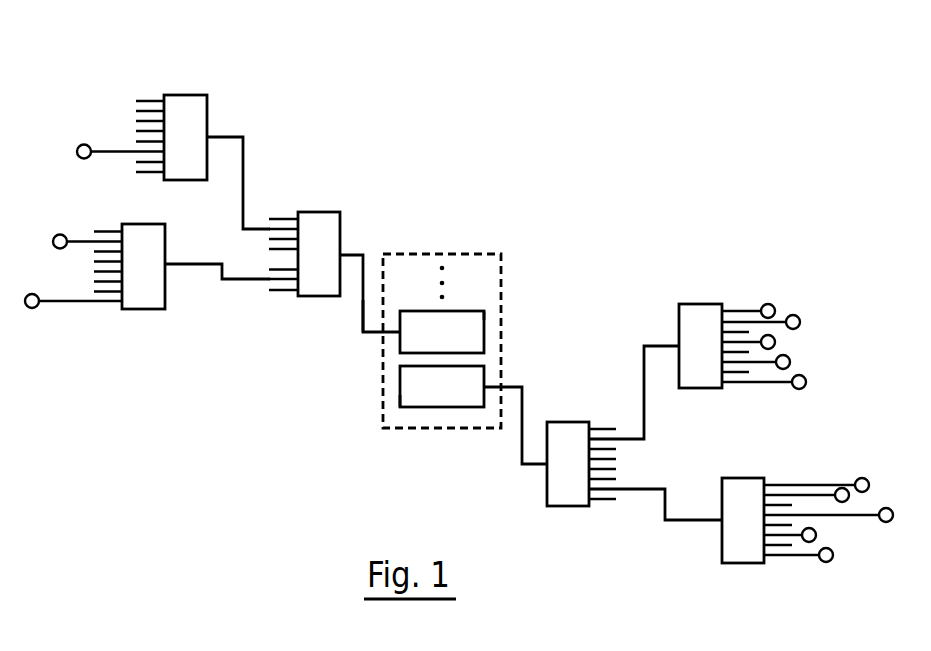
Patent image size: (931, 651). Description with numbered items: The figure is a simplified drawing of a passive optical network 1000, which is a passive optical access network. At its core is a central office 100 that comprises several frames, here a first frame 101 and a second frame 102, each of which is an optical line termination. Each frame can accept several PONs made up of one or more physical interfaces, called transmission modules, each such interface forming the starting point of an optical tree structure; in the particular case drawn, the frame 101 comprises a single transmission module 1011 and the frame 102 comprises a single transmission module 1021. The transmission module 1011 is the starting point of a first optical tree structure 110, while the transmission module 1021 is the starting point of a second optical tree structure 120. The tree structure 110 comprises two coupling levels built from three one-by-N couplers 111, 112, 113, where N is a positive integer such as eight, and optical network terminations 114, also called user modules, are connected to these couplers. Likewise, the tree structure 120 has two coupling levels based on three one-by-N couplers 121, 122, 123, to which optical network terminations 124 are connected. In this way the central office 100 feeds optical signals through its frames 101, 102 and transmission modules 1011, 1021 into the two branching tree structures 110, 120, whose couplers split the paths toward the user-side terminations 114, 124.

The passive optical network 1000 is at (628, 157).
The central office 100 is at (395, 253).
The frame 101 is at (463, 310).
The transmission module 1011 is at (485, 310).
The frame 102 is at (400, 382).
The transmission module 1021 is at (400, 395).
The optical tree structure 110 is at (363, 333).
The 1×N coupler 111 is at (317, 212).
The 1×N coupler 112 is at (185, 95).
The 1×N coupler 113 is at (143, 310).
The optical network terminations 114 is at (32, 294).
The optical tree structure 120 is at (522, 397).
The 1×N coupler 121 is at (565, 507).
The 1×N coupler 122 is at (693, 304).
The 1×N coupler 123 is at (742, 565).
The optical network terminations 124 is at (799, 375).